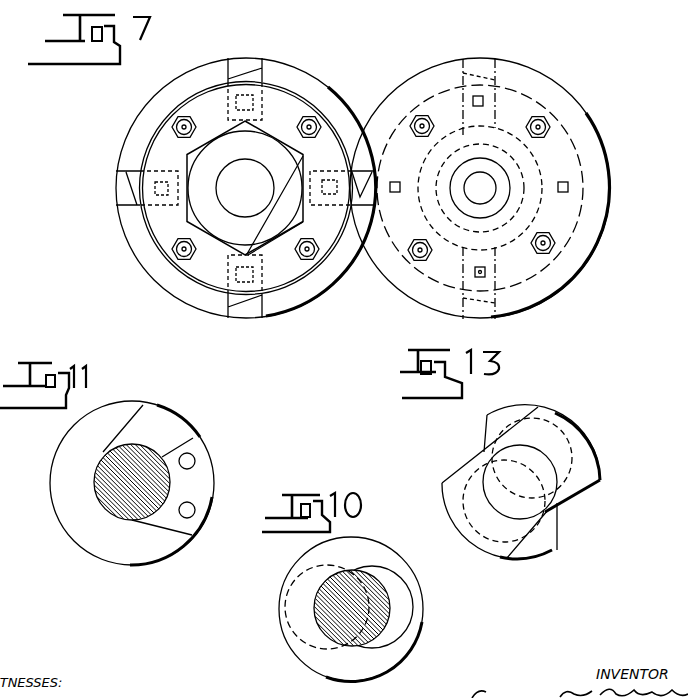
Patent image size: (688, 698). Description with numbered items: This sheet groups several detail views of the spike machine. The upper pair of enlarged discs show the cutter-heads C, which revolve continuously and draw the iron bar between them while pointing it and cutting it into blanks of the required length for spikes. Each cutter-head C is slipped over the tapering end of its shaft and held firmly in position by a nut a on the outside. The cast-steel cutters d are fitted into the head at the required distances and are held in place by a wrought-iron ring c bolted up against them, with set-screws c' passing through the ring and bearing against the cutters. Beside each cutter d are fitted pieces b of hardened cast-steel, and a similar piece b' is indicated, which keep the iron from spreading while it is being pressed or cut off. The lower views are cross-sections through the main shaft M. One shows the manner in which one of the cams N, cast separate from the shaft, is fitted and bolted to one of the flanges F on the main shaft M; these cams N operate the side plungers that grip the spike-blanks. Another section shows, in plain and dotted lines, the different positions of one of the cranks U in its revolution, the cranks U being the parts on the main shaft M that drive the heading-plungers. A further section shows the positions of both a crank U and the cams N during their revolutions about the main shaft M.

In FIG. 7, the cutter-head C is at (363, 183).
In FIG. 7, the nut a is at (364, 174).
In FIG. 7, the hardened cast-steel piece b is at (305, 191).
In FIG. 7, the radial slot b' is at (479, 283).
In FIG. 7, the wrought-iron ring c is at (363, 177).
In FIG. 7, the set-screw c' is at (369, 188).
In FIG. 7, the cutter d is at (389, 191).
In FIG. 11, the main shaft M is at (96, 470).
In FIG. 10, the main shaft M is at (347, 577).
In FIG. 13, the main shaft M is at (520, 482).
In FIG. 11, the cam N is at (149, 470).
In FIG. 13, the cam N is at (521, 482).
In FIG. 11, the flange F is at (132, 483).
In FIG. 10, the flange F is at (351, 609).
In FIG. 10, the crank U is at (354, 607).
In FIG. 13, the crank U is at (517, 480).